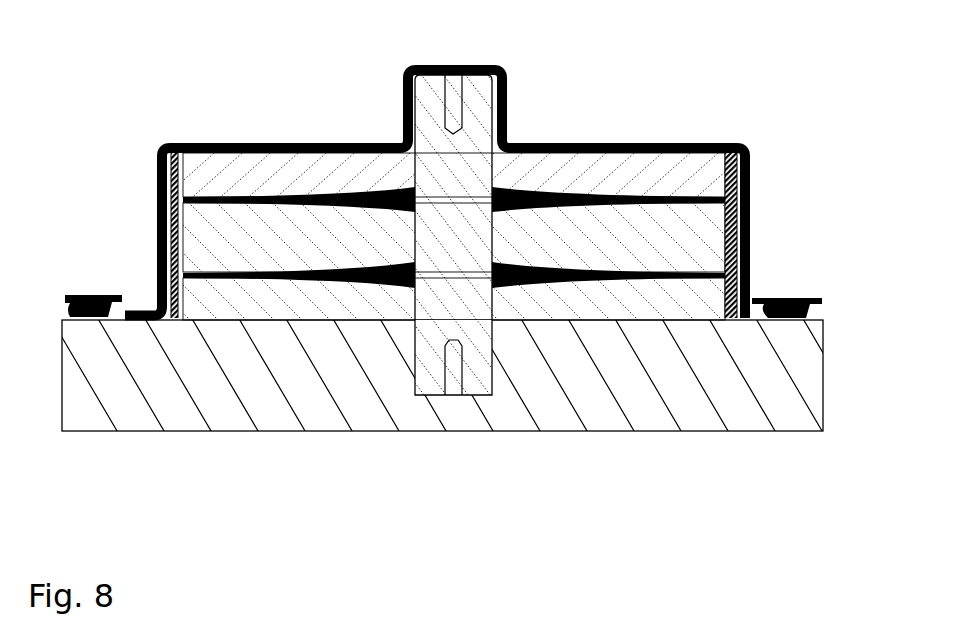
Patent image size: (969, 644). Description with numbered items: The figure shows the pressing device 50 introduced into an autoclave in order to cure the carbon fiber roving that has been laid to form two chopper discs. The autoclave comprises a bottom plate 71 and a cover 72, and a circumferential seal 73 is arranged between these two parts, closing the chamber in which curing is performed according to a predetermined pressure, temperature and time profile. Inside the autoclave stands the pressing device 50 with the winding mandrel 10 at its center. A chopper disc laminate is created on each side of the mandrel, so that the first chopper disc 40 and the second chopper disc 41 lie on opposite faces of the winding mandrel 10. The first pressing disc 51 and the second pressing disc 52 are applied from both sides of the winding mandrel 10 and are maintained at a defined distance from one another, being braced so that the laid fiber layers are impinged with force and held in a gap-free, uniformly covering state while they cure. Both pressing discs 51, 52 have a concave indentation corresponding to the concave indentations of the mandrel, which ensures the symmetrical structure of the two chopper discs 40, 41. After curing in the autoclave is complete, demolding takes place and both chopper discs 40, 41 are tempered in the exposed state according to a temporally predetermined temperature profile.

The winding mandrel 10 is at (702, 243).
The chopper disc 40 is at (503, 290).
The chopper disc 41 is at (505, 187).
The pressing device 50 is at (702, 148).
The first pressing disc 51 is at (713, 300).
The second pressing disc 52 is at (702, 178).
The bottom plate 71 is at (247, 431).
The cover 72 is at (223, 143).
The circumferential seal 73 is at (85, 325).